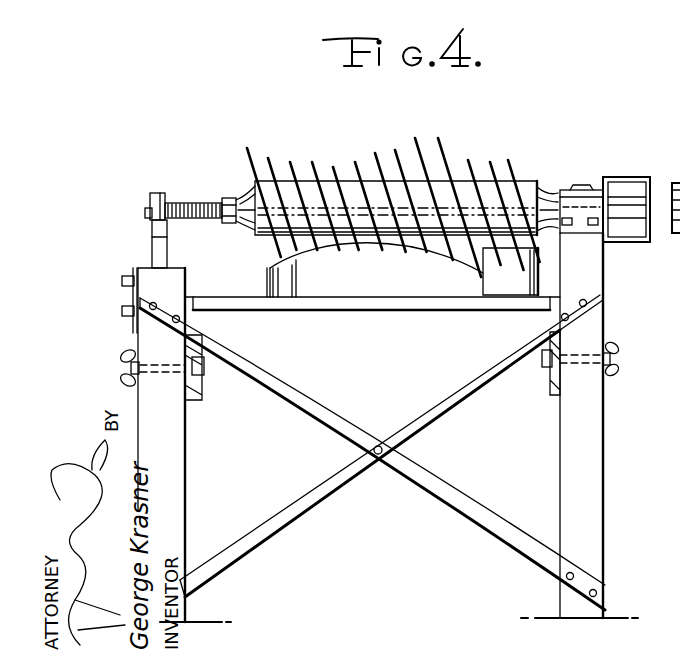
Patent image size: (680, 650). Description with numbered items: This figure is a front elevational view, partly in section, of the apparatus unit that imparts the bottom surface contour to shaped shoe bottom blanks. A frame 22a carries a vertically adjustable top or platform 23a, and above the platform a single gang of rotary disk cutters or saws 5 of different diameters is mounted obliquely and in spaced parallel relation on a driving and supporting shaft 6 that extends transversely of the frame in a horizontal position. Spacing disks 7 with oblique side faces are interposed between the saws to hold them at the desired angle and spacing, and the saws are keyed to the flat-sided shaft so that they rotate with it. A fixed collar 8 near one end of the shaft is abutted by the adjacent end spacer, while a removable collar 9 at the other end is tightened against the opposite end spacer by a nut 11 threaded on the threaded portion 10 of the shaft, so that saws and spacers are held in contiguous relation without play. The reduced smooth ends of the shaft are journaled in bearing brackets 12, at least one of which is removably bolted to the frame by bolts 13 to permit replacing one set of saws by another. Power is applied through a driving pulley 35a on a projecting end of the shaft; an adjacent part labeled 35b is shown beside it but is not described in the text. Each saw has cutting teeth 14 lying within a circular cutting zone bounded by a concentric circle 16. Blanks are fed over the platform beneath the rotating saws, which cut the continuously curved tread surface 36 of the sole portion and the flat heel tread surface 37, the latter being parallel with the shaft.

The rotary disk cutters or saws 5 is at (355, 162).
The driving and supporting shaft 6 is at (147, 208).
The spacing disks 7 is at (398, 233).
The fixed enlargement or collar 8 is at (475, 163).
The removable collar 9 is at (250, 188).
The threaded portion 10 is at (190, 203).
The nut 11 is at (228, 199).
The bearing brackets 12 is at (150, 253).
The bolts 13 is at (121, 281).
The cutting teeth 14 is at (238, 142).
The concentric circle 16 is at (401, 124).
The frame 22a is at (572, 420).
The vertically adjustable top or platform 23a is at (428, 307).
The driving pulley 35a is at (625, 188).
The driving member 35b is at (661, 239).
The tread surface of the sole portion 36 is at (270, 250).
The tread surface of the heel 37 is at (538, 184).